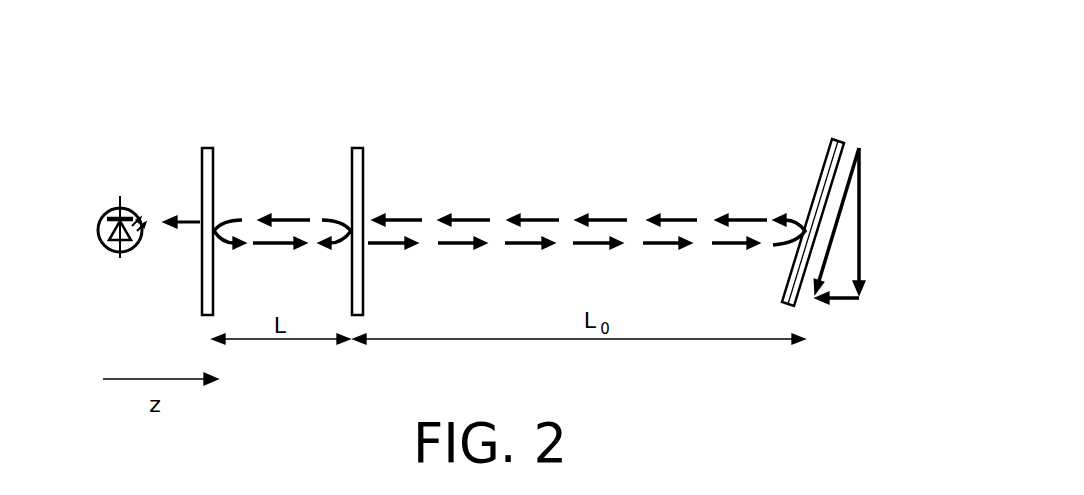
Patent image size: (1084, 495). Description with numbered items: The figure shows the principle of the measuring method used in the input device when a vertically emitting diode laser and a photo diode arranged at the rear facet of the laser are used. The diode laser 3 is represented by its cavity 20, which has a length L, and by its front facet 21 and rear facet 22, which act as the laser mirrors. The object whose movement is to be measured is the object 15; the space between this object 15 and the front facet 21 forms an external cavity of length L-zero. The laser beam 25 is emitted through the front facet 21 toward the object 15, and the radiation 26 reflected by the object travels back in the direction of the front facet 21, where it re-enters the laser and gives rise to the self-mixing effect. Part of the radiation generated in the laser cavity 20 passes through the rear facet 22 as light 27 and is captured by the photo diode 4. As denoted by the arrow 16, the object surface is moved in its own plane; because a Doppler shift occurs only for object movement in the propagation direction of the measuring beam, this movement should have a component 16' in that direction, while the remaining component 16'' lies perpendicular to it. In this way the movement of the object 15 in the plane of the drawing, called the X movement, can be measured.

The diode laser 3 is at (268, 102).
The photo diode 4 is at (100, 218).
The rear facet 22 is at (203, 160).
The front facet 21 is at (358, 160).
The cavity 20 is at (282, 206).
The radiation reflected by the object 26 is at (540, 218).
The laser beam 25 is at (563, 248).
The light leaking through rear reflector 27 is at (187, 225).
The object 15 is at (822, 162).
The arrow 16 is at (791, 221).
The component 16' is at (845, 332).
The vertical component of normal vector 16'' is at (902, 221).